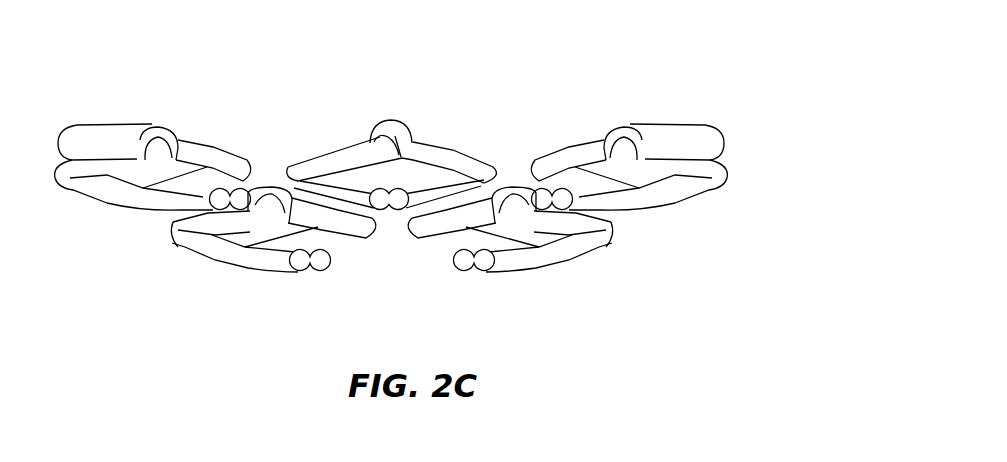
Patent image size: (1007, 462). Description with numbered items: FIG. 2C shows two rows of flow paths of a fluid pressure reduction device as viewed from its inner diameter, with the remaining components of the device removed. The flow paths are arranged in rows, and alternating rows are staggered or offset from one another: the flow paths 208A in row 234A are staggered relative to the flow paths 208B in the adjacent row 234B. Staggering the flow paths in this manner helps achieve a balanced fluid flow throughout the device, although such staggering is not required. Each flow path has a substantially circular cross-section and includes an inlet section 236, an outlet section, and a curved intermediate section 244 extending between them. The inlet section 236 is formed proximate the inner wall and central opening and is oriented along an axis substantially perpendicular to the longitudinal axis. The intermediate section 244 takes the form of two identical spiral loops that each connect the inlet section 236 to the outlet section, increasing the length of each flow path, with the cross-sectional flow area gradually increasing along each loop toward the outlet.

The flow paths 208A is at (426, 171).
The flow paths 208B is at (492, 262).
The row 234A is at (737, 123).
The row 234B is at (709, 227).
The curved intermediate section 244 is at (447, 153).
The inlet section 236 is at (390, 210).